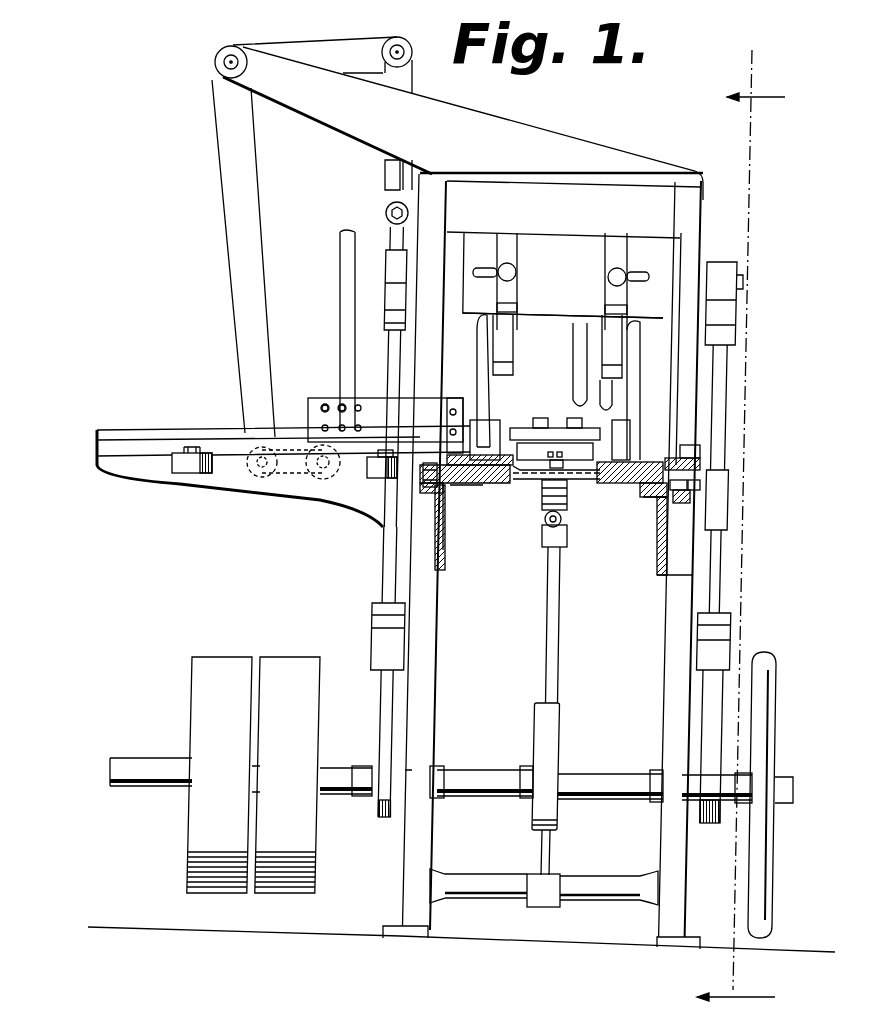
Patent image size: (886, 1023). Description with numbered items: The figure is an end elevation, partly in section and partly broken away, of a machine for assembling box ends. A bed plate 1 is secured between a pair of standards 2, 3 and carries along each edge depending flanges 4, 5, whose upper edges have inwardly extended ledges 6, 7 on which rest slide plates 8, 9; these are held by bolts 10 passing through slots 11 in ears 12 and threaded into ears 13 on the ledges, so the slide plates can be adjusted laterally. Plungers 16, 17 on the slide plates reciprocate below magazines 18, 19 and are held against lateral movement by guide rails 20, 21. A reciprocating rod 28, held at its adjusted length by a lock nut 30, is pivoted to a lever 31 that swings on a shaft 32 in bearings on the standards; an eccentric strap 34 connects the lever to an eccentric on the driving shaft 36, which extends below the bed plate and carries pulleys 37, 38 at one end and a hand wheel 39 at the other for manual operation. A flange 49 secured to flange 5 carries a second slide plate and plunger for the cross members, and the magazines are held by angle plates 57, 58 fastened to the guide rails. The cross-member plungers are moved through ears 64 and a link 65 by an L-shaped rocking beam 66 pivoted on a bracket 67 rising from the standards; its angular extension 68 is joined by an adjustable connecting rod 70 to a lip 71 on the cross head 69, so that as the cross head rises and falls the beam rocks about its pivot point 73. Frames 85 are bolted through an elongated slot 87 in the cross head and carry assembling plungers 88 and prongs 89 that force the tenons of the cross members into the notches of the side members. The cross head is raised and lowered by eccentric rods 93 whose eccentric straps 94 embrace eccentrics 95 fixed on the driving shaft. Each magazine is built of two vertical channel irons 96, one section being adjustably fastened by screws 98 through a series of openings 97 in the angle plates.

The bed plate 1 is at (597, 482).
The standard 2 is at (645, 636).
The standard 3 is at (430, 640).
The depending flange 4 is at (658, 560).
The depending flange 5 is at (446, 552).
The ledge 6 is at (644, 500).
The ledge 7 is at (451, 497).
The slide plate 8 is at (660, 469).
The slide plate 9 is at (445, 456).
The bolt 10 is at (423, 476).
The slot 11 is at (440, 487).
The ear 12 is at (690, 482).
The ear 13 is at (696, 488).
The plunger 16 is at (648, 460).
The plunger 17 is at (482, 440).
The magazine 18 is at (338, 321).
The magazine 19 is at (486, 364).
The guide rail 20 is at (422, 440).
The guide rail 21 is at (601, 460).
The reciprocating rod 28 is at (548, 526).
The lock nut 30 is at (580, 526).
The lever 31 is at (543, 656).
The shaft 32 is at (597, 898).
The eccentric strap 34 is at (538, 726).
The driving shaft 36 is at (137, 788).
The pulley 37 is at (208, 667).
The pulley 38 is at (301, 670).
The hand wheel 39 is at (776, 700).
The flange 49 is at (218, 481).
The angle plate 57 is at (403, 432).
The angle plate 58 is at (500, 422).
The ear 64 is at (323, 480).
The link 65 is at (272, 478).
The rocking beam 66 is at (236, 268).
The bracket 67 is at (548, 137).
The angular extension 68 is at (331, 47).
The cross head 69 is at (572, 240).
The connecting rod 70 is at (414, 82).
The lip 71 is at (390, 186).
The pivot point 73 is at (215, 68).
The frame 85 is at (618, 324).
The elongated slot 87 is at (570, 276).
The assembling plunger 88 is at (607, 354).
The prong 89 is at (609, 400).
The eccentric rod 93 is at (394, 346).
The eccentric strap 94 is at (386, 713).
The eccentric 95 is at (390, 739).
The channel iron 96 is at (346, 279).
The opening 97 is at (320, 407).
The screw 98 is at (340, 406).